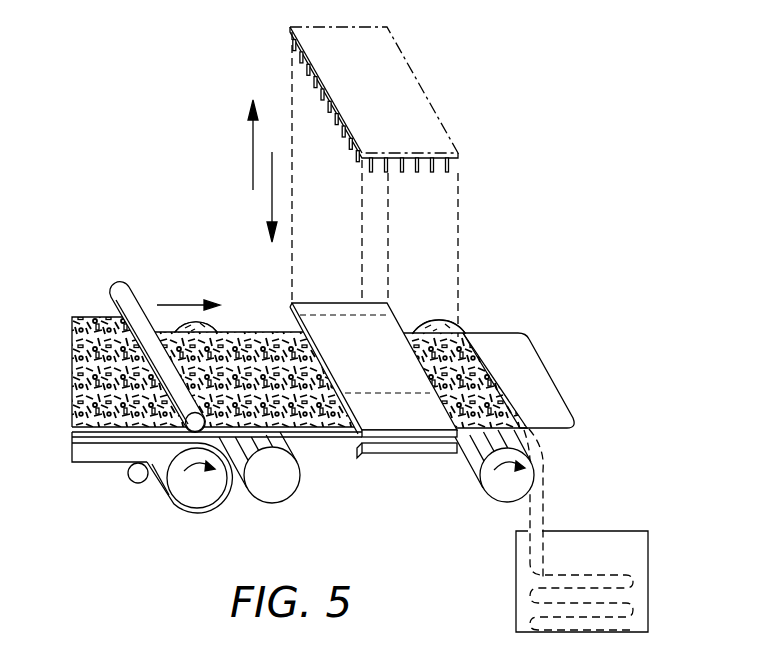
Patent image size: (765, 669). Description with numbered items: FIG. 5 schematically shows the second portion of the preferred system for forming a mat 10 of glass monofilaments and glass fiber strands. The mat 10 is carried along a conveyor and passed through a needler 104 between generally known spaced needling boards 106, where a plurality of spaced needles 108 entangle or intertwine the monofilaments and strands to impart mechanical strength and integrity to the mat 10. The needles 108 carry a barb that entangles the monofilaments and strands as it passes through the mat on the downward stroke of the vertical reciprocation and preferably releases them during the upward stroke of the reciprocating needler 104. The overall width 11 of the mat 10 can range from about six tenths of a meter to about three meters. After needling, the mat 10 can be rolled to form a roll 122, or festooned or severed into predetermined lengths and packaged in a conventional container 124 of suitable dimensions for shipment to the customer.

The mat 10 is at (290, 320).
The overall width 11 is at (558, 382).
The needler 104 is at (383, 455).
The needling boards 106 is at (411, 70).
The needles 108 is at (449, 166).
The roll 122 is at (493, 503).
The container 124 is at (648, 560).